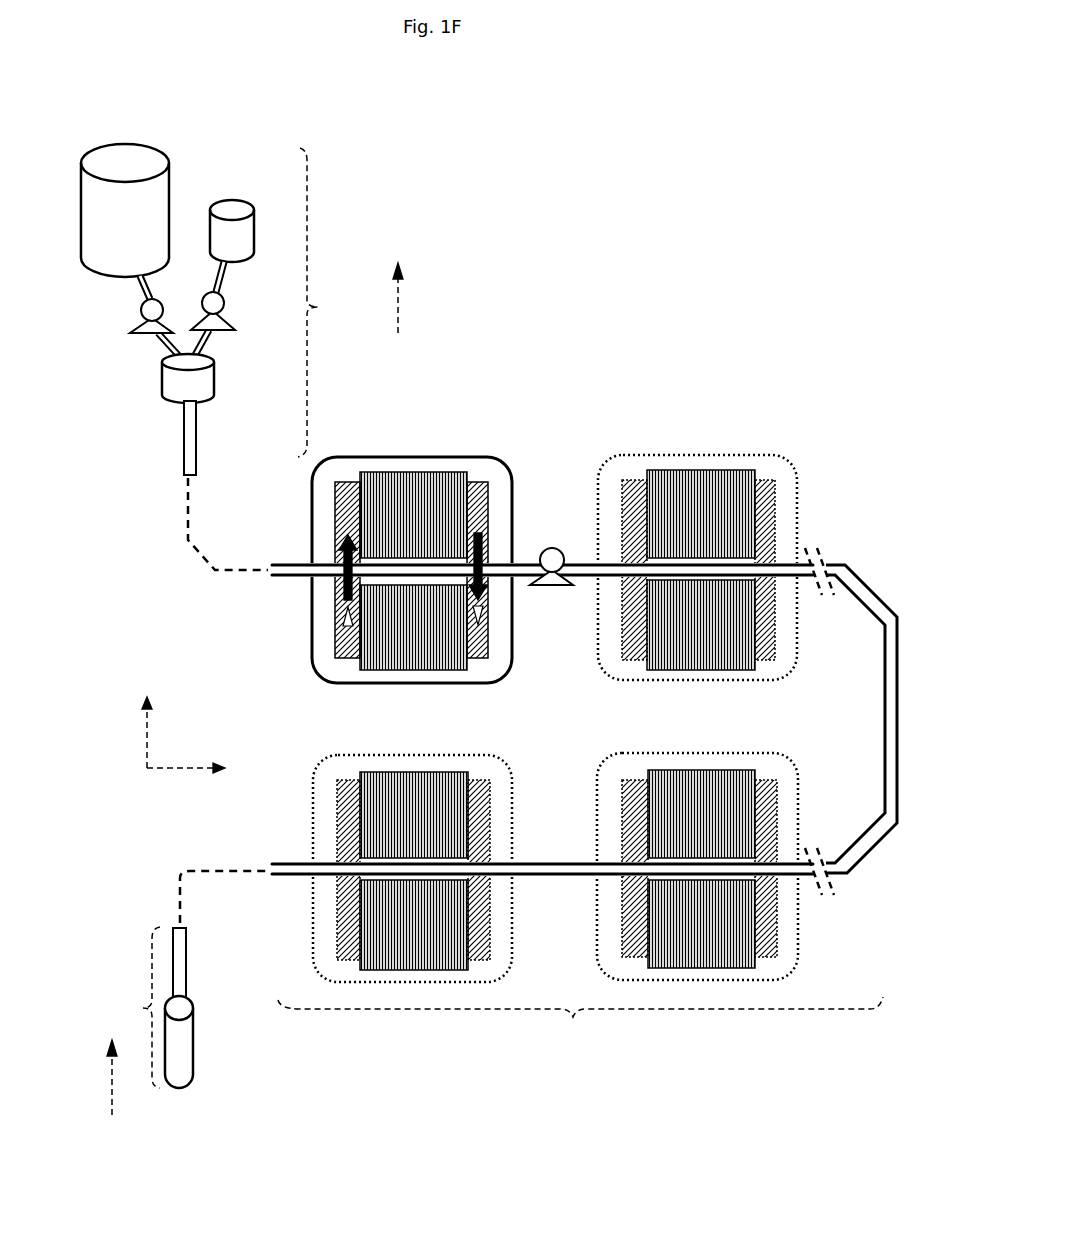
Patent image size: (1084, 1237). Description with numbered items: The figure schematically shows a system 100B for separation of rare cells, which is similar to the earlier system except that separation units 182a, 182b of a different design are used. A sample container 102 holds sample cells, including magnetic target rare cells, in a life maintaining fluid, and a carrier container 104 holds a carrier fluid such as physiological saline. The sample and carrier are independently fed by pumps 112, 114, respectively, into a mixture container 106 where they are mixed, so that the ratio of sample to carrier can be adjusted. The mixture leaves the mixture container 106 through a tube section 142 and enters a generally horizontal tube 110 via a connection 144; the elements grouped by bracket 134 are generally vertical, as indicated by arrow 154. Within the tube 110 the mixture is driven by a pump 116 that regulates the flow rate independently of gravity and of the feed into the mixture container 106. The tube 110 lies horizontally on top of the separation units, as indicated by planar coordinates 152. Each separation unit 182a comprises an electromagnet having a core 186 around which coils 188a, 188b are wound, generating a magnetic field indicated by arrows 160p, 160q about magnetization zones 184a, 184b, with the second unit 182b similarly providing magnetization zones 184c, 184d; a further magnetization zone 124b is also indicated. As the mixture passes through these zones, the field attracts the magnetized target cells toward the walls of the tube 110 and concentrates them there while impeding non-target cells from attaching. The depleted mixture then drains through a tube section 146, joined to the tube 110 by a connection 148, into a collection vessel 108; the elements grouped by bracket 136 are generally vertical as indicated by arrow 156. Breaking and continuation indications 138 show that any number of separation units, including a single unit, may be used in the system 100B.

The system 100B is at (747, 130).
The sample container 102 is at (247, 200).
The carrier container 104 is at (170, 183).
The mixture container 106 is at (213, 378).
The collection vessel 108 is at (193, 1060).
The tube 110 is at (885, 710).
The pump 112 is at (233, 316).
The pump 114 is at (132, 327).
The pump 116 is at (556, 548).
The magnetization zone 124b is at (555, 842).
The bracket 134 is at (308, 214).
The bracket 136 is at (150, 960).
The breaking/continuation indications 138 is at (820, 550).
The tube section 142 is at (183, 442).
The connection 144 is at (186, 530).
The tube section 146 is at (190, 955).
The connection 148 is at (185, 885).
The planar coordinates 152 is at (177, 768).
The arrow 154 is at (398, 316).
The arrow 156 is at (112, 1097).
The arrow 160p is at (337, 590).
The arrow 160q is at (485, 525).
The separation unit 182a is at (408, 457).
The separation unit 182b is at (708, 455).
The magnetization zone 184a is at (335, 636).
The magnetization zone 184b is at (488, 636).
The magnetization zone 184c is at (635, 583).
The magnetization zone 184d is at (766, 584).
The core 186 is at (488, 488).
The coil 188a is at (435, 480).
The coil 188b is at (360, 664).